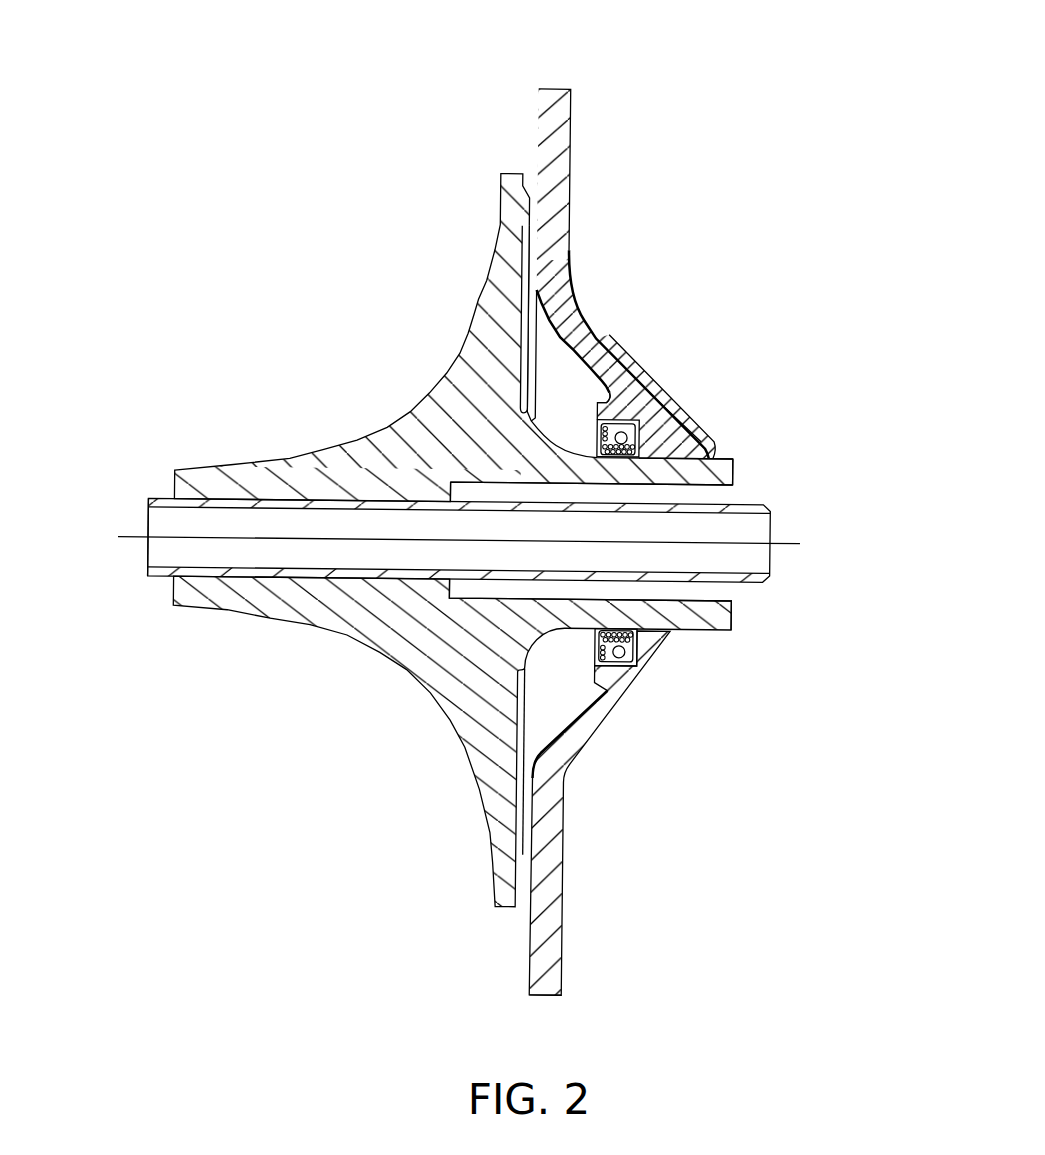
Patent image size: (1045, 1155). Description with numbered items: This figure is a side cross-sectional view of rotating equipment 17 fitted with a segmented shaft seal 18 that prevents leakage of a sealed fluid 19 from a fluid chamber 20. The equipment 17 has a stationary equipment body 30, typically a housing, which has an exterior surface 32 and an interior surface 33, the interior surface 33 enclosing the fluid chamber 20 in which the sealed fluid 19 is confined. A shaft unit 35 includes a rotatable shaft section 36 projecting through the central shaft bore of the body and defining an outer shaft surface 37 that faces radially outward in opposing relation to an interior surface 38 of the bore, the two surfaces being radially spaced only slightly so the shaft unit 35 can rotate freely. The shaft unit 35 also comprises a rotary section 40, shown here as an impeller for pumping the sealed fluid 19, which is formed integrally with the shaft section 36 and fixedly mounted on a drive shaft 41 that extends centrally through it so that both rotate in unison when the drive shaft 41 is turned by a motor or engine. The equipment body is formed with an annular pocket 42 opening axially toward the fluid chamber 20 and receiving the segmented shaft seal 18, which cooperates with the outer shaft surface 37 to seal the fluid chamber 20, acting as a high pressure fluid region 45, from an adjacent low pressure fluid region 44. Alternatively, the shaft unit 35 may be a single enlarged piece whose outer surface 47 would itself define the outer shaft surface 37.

The rotating equipment 17 is at (689, 85).
The segmented shaft seal 18 is at (634, 388).
The sealed fluid 19 is at (552, 360).
The fluid chamber 20 is at (595, 349).
The equipment body 30 is at (666, 423).
The exterior surface 32 is at (570, 961).
The interior surface 33 is at (531, 961).
The shaft unit 35 is at (262, 626).
The shaft section 36 is at (737, 614).
The outer shaft surface 37 is at (729, 455).
The interior surface of the shaft bore 38 is at (681, 446).
The rotary section 40 is at (473, 314).
The drive shaft 41 is at (148, 502).
The annular pocket 42 is at (639, 666).
The fluid region 44 is at (829, 486).
The high pressure fluid region 45 is at (631, 401).
The outer surface 47 is at (745, 504).